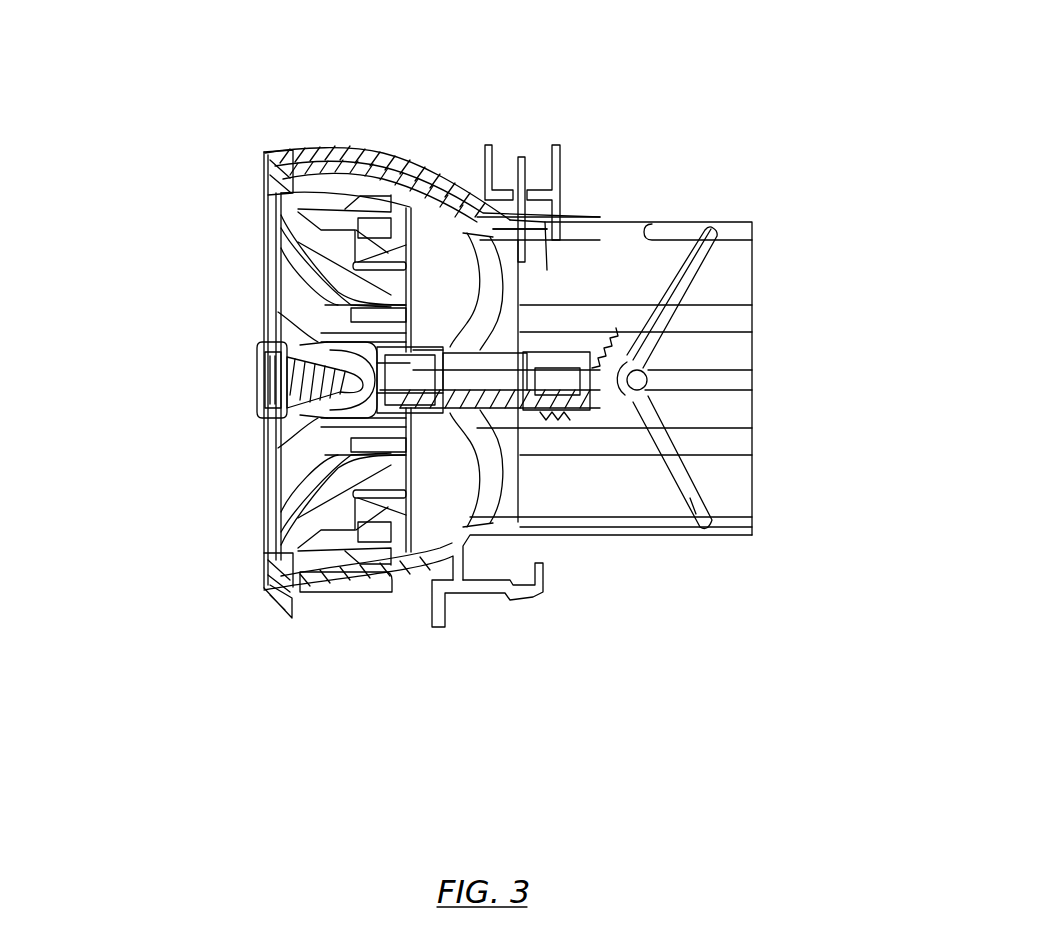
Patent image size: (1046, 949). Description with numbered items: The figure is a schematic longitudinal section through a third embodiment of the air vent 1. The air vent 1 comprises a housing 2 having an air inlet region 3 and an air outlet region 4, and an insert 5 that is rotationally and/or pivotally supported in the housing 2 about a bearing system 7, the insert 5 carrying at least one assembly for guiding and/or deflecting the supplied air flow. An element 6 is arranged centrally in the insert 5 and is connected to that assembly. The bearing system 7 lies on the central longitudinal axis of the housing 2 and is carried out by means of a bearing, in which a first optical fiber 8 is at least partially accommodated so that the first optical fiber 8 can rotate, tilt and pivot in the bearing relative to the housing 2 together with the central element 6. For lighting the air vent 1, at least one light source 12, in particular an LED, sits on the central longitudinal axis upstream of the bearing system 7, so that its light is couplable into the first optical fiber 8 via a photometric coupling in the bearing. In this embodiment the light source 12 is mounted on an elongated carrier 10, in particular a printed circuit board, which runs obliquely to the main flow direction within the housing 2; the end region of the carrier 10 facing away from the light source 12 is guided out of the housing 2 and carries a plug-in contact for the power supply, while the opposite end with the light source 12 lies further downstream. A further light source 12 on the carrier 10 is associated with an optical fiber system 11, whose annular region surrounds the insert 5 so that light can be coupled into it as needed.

The air vent 1 is at (408, 62).
The housing 2 is at (383, 153).
The air inlet region 3 is at (763, 323).
The air outlet region 4 is at (245, 292).
The insert 5 is at (250, 380).
The element 6 is at (345, 352).
The bearing system 7 is at (340, 325).
The first optical fiber 8 is at (352, 383).
The carrier 10 is at (445, 381).
The optical fiber system 11 is at (322, 175).
The light source 12 is at (517, 217).